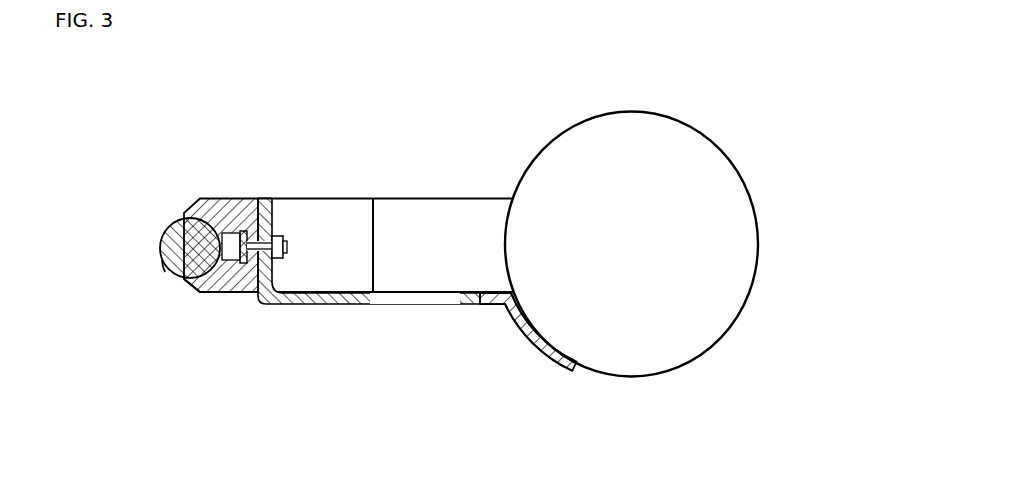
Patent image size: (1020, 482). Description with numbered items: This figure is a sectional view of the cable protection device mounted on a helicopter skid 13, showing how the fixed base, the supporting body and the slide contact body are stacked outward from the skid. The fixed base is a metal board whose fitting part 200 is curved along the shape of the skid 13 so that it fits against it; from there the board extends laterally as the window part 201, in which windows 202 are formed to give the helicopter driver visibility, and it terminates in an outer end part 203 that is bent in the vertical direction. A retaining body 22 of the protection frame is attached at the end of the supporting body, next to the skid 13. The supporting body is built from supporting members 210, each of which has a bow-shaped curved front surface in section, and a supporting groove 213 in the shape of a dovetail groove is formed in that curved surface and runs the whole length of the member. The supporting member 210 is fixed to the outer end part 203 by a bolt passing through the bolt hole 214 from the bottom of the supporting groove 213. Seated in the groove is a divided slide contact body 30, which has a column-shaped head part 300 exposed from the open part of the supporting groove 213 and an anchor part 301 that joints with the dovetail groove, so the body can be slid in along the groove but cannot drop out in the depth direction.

The skid 13 is at (627, 110).
The retaining body 22 is at (428, 197).
The divided slide contact body 30 is at (163, 314).
The fitting part 200 is at (535, 348).
The window part 201 is at (305, 306).
The window 202 is at (369, 306).
The outer end part 203 is at (275, 221).
The supporting member 210 is at (228, 197).
The supporting groove 213 is at (180, 226).
The bolt hole 214 is at (232, 264).
The head part 300 is at (160, 270).
The anchor part 301 is at (197, 291).